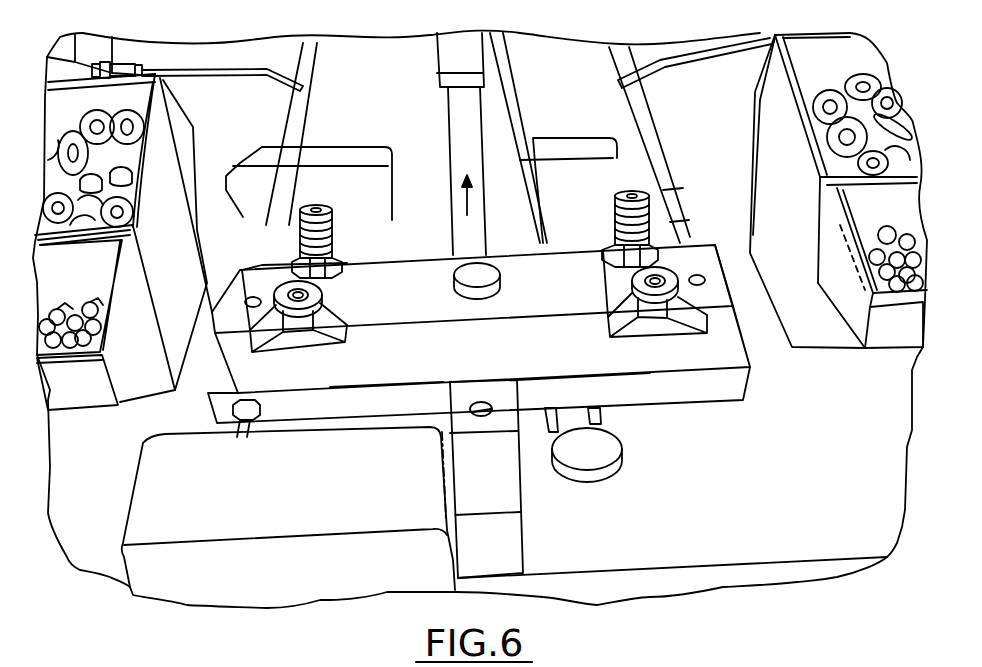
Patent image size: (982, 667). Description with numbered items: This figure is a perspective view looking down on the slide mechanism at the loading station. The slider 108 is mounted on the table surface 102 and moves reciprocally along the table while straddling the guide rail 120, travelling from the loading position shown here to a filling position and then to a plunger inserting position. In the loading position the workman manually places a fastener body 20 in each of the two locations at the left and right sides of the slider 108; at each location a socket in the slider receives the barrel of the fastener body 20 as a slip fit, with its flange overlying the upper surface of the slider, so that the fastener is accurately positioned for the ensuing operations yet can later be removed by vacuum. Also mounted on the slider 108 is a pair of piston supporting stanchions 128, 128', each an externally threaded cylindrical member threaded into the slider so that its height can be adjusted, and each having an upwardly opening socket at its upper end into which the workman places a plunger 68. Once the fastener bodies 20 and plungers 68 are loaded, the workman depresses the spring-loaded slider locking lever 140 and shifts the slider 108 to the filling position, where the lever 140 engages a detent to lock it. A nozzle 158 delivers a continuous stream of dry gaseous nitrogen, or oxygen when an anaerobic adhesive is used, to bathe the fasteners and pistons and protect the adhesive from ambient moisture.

The table surface 102 is at (851, 508).
The slider 108 is at (481, 363).
The guide rail 120 is at (458, 115).
The piston supporting stanchion 128 is at (310, 172).
The piston supporting stanchion 128' is at (568, 163).
The slider locking lever 140 is at (610, 455).
The nitrogen gas delivery nozzle 158 is at (207, 72).
The fastener body 20 is at (323, 295).
The plunger 68 is at (316, 207).